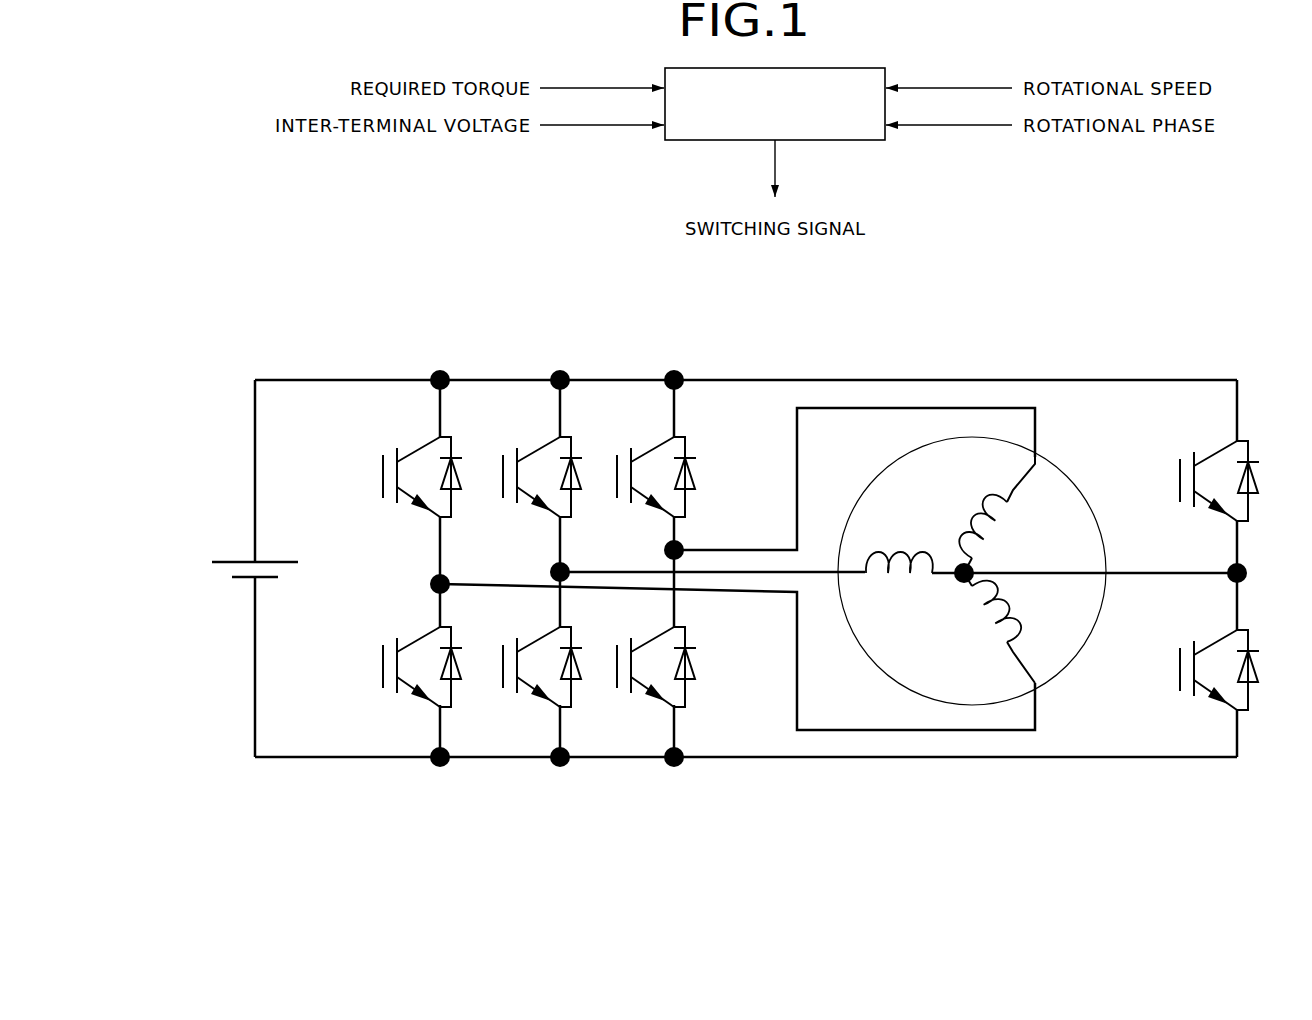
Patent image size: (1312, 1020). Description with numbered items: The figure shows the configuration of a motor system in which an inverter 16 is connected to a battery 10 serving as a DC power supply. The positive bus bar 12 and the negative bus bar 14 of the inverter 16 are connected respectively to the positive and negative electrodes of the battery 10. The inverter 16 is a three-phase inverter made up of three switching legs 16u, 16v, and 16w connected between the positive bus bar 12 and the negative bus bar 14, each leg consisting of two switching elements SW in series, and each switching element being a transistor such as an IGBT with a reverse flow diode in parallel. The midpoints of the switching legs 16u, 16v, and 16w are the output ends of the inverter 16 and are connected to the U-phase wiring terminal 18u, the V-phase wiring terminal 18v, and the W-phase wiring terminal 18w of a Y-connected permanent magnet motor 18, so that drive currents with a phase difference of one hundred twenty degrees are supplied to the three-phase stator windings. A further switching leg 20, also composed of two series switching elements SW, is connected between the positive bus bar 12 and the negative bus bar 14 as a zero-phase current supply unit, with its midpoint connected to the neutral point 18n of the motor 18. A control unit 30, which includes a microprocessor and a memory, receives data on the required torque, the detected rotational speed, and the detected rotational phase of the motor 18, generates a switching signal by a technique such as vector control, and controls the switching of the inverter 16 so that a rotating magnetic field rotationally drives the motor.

The battery 10 is at (208, 562).
The positive bus bar 12 is at (312, 380).
The negative bus bar 14 is at (333, 760).
The inverter 16 is at (565, 601).
The switching leg 16u is at (459, 410).
The switching leg 16v is at (585, 410).
The switching leg 16w is at (708, 410).
The motor 18 is at (1003, 555).
The U-phase wiring terminal 18u is at (1018, 733).
The V-phase wiring terminal 18v is at (813, 578).
The W-phase wiring terminal 18w is at (1027, 478).
The neutral point 18n is at (1000, 590).
The switching leg 20 is at (1242, 365).
The control unit 30 is at (862, 142).